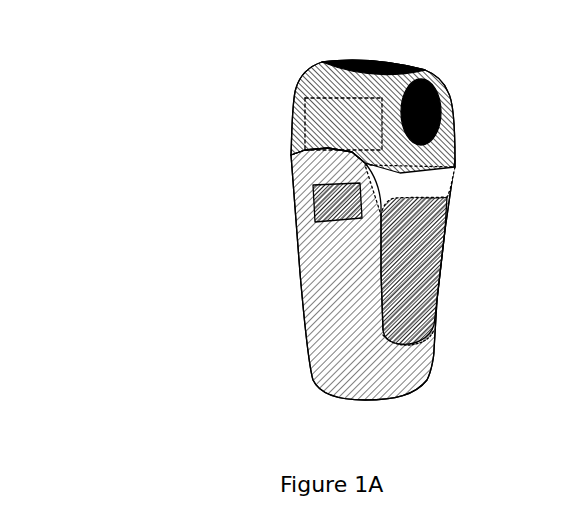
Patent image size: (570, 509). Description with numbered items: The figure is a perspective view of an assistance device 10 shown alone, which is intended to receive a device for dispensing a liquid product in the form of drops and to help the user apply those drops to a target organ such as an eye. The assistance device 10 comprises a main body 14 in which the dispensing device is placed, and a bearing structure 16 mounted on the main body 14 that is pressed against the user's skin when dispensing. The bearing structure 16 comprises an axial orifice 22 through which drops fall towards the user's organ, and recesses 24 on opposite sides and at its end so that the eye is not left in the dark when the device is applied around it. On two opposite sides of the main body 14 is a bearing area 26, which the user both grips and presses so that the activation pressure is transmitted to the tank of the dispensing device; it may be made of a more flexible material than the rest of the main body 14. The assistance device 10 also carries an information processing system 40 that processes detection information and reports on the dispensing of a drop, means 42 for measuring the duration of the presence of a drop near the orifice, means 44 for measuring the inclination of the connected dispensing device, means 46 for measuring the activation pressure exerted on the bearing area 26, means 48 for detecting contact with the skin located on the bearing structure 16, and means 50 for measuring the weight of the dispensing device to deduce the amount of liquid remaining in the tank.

The assistance device 10 is at (133, 302).
The main body 14 is at (327, 307).
The bearing structure 16 is at (290, 170).
The axial orifice 22 is at (317, 63).
The recesses 24 is at (440, 120).
The bearing area 26 is at (417, 277).
The information processing system 40 is at (293, 98).
The means for measuring the duration of the presence of a drop 42 is at (293, 118).
The means for measuring the inclination 44 is at (290, 135).
The means for measuring the activation pressure 46 is at (428, 248).
The means for detecting contact with the skin 48 is at (428, 70).
The means for measuring the weight 50 is at (337, 357).